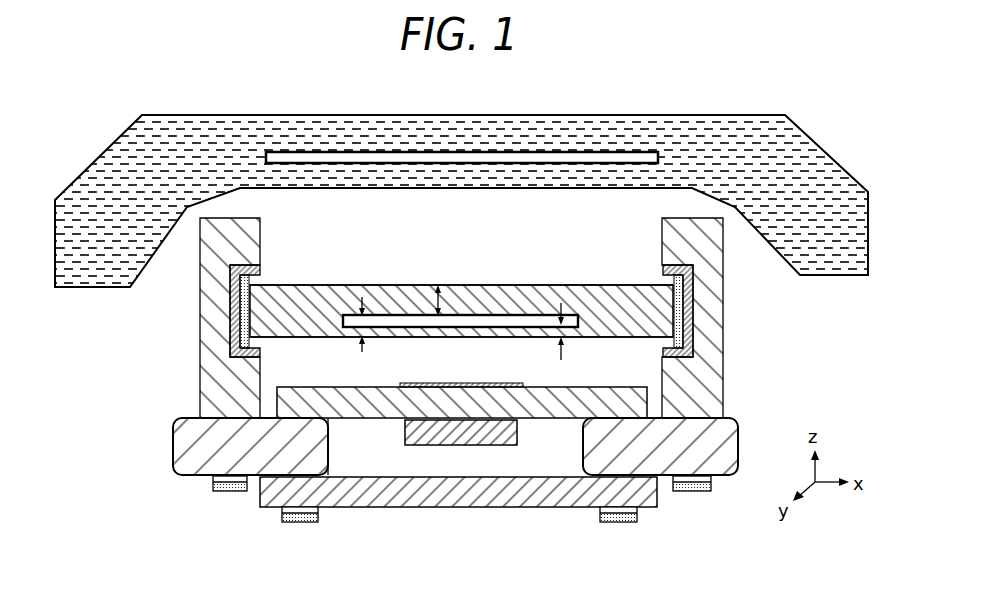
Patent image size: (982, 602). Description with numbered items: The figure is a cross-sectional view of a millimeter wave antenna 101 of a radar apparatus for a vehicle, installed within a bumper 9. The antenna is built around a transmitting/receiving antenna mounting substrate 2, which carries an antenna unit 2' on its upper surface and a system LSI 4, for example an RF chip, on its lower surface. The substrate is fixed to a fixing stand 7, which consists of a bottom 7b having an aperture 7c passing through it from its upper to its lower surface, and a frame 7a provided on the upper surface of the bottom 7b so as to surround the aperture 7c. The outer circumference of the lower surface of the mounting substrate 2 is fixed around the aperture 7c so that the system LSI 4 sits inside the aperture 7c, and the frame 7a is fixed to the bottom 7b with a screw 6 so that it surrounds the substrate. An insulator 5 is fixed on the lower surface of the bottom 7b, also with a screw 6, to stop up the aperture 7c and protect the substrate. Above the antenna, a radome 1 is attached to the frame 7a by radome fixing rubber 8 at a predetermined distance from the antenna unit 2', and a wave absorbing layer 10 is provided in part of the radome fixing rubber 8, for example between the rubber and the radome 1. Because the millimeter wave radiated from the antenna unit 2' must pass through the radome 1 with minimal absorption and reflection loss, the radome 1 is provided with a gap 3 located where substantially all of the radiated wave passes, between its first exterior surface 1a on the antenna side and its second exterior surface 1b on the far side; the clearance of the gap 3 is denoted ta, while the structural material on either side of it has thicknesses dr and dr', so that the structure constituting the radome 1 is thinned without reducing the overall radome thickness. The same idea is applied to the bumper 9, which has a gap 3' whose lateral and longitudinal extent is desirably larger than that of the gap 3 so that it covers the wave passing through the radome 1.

The radome 1 is at (316, 292).
The first exterior surface 1a is at (517, 338).
The second exterior surface 1b is at (425, 285).
The transmitting/receiving antenna mounting substrate 2 is at (457, 387).
The antenna unit 2' is at (460, 367).
The gap 3 is at (460, 279).
The gap 3' is at (462, 116).
The system LSI 4 is at (508, 432).
The insulator 5 is at (430, 500).
The screw 6 is at (232, 489).
The fixing stand 7 is at (438, 388).
The frame 7a is at (215, 342).
The bottom 7b is at (192, 448).
The aperture 7c is at (330, 452).
The radome fixing rubber 8 is at (250, 266).
The bumper 9 is at (795, 264).
The wave absorbing layer 10 is at (257, 343).
The millimeter wave antenna 101 is at (770, 338).
The clearance of gap ta is at (364, 318).
The thickness of radome structure dr is at (455, 286).
The thickness of radome structure dr' is at (581, 308).